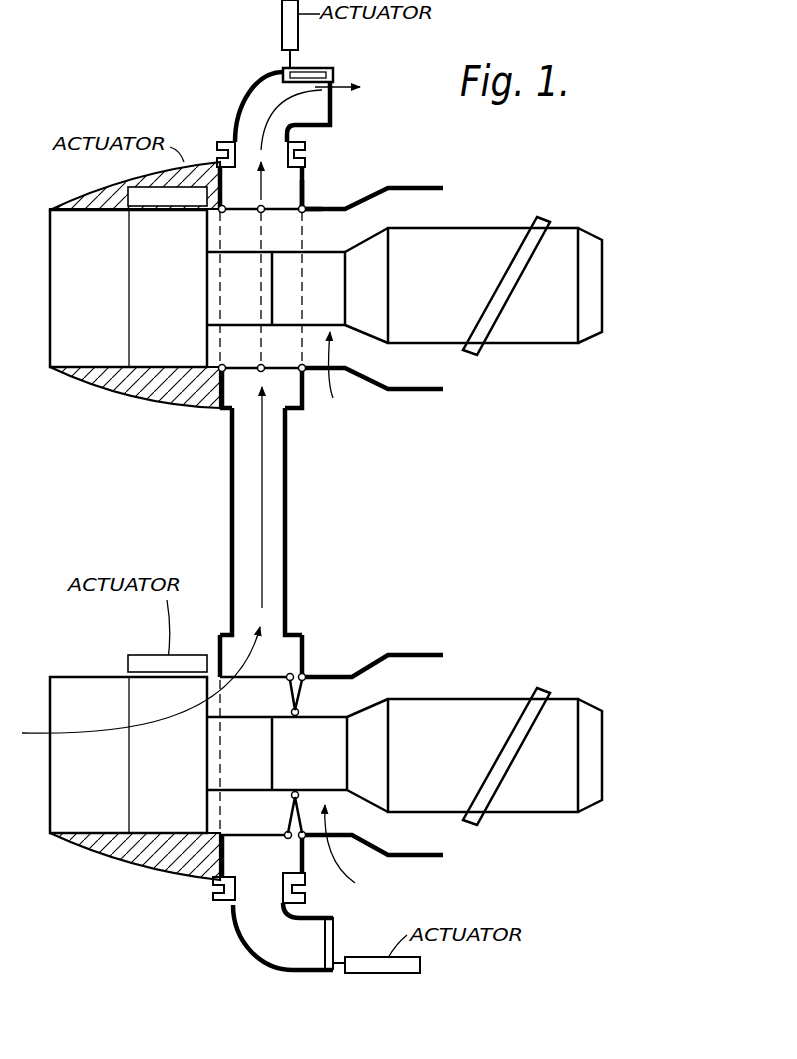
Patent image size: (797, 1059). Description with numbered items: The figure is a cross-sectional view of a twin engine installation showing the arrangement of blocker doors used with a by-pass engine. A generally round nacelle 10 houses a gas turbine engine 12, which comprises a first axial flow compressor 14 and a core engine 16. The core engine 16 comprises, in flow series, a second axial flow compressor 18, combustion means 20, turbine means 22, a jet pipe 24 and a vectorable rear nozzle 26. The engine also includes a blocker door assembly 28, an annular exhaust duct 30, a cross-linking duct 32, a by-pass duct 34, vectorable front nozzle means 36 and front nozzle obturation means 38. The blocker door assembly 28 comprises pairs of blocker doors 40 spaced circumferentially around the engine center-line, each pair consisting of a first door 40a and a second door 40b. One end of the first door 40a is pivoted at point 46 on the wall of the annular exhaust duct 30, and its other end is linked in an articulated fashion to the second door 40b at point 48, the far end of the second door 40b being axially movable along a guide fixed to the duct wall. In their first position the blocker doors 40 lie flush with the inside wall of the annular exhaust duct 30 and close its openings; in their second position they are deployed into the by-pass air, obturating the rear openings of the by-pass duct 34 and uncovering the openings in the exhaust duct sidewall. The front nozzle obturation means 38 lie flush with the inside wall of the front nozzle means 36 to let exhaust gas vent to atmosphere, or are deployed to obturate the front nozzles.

The nacelle 10 is at (112, 400).
The gas turbine engine 12 is at (455, 240).
The first axial flow compressor 14 is at (143, 228).
The core engine 16 is at (203, 492).
The second axial flow compressor 18 is at (192, 378).
The combustion means 20 is at (377, 230).
The turbine means 22 is at (323, 290).
The jet pipe 24 is at (502, 238).
The vectorable rear nozzle 26 is at (590, 240).
The blocker door assembly 28 is at (285, 205).
The annular exhaust duct 30 is at (220, 152).
The cross-linking duct 32 is at (290, 507).
The by-pass duct 34 is at (404, 392).
The vectorable front nozzle means 36 is at (263, 86).
The front nozzle obturation means 38 is at (315, 72).
The blocker doors 40 is at (298, 708).
The first door 40a is at (282, 202).
The second door 40b is at (167, 197).
The pivot point 46 is at (306, 204).
The articulation point 48 is at (267, 207).